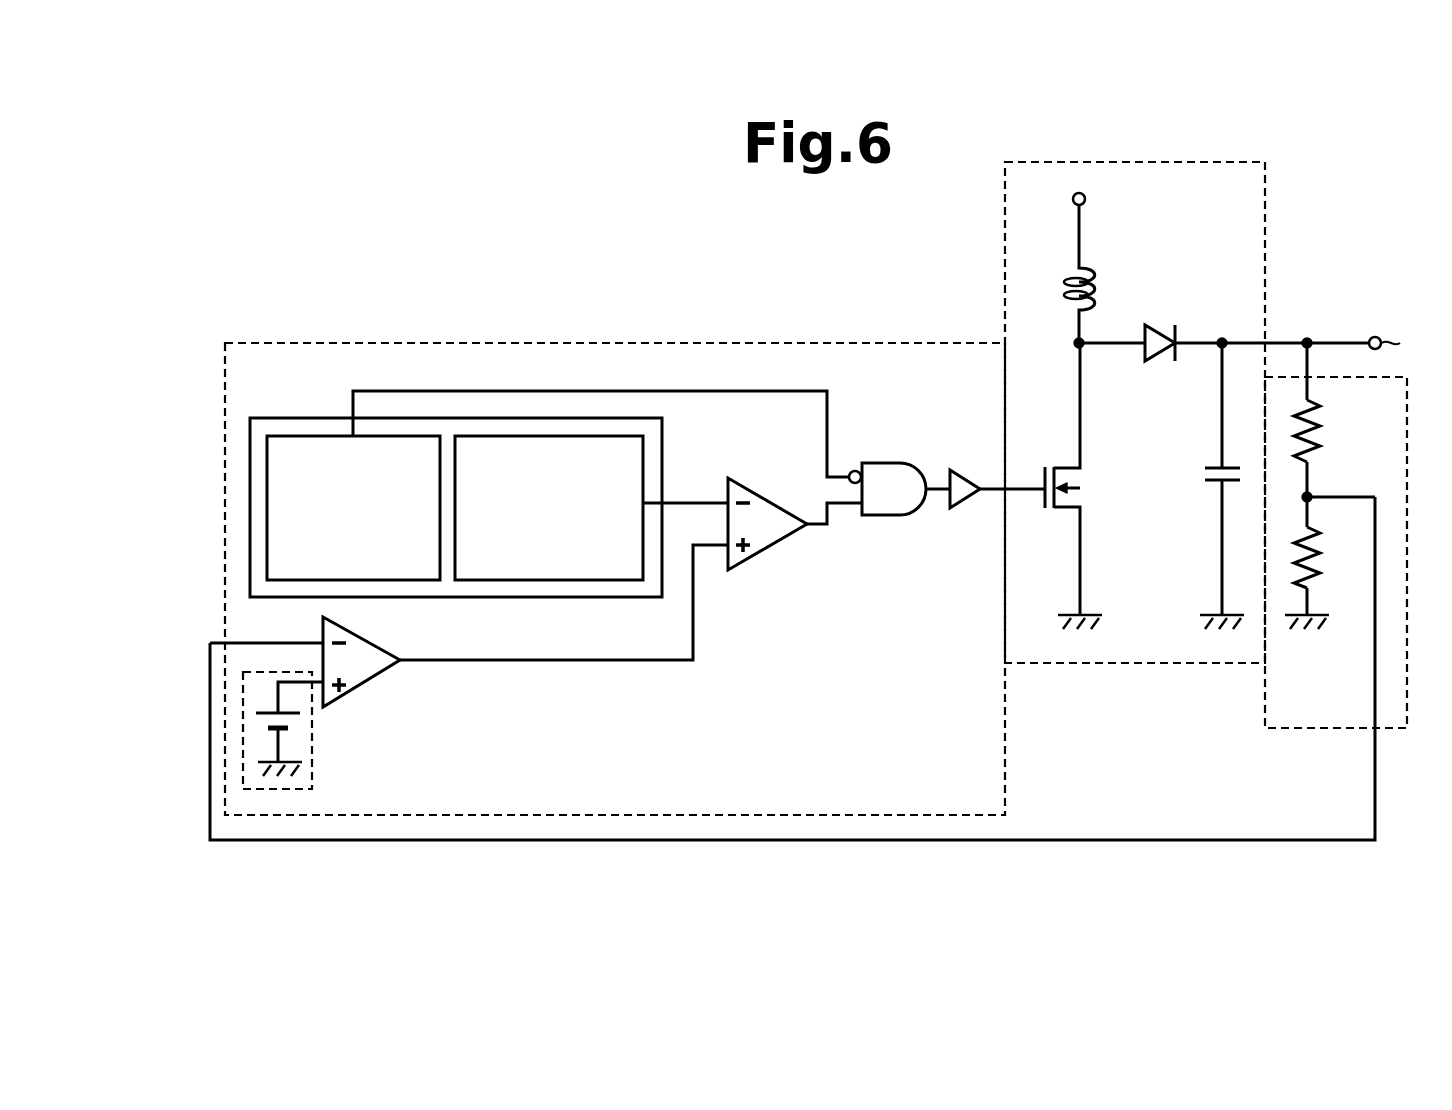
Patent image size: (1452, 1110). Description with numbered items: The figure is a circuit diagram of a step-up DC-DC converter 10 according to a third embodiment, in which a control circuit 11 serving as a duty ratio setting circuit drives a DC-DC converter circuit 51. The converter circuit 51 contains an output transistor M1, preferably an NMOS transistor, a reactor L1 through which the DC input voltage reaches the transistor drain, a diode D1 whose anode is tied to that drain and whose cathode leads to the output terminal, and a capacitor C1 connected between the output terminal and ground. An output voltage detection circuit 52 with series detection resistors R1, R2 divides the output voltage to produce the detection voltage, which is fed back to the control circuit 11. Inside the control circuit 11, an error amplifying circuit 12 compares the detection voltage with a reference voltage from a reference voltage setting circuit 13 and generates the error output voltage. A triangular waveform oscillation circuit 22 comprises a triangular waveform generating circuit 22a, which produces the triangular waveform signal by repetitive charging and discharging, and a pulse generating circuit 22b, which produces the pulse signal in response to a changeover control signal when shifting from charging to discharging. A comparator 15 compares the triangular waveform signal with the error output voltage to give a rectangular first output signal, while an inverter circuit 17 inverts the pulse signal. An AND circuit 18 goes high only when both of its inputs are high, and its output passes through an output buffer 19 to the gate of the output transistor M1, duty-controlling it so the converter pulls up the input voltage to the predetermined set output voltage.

The DC-DC converter 10 is at (875, 287).
The control circuit 11 is at (622, 340).
The error amplifying circuit 12 is at (373, 677).
The reference voltage setting circuit 13 is at (314, 750).
The comparator 15 is at (775, 545).
The inverter circuit 17 is at (853, 470).
The AND circuit 18 is at (875, 515).
The output buffer 19 is at (955, 472).
The triangular waveform oscillation circuit 22 is at (325, 418).
The triangular waveform generating circuit 22a is at (617, 580).
The pulse generating circuit 22b is at (410, 580).
The DC-DC converter circuit 51 is at (1266, 198).
The output voltage detection circuit 52 is at (1355, 730).
The reactor L1 is at (1097, 263).
The diode D1 is at (1160, 325).
The capacitor C1 is at (1212, 468).
The output transistor M1 is at (1080, 470).
The detection resistor R1 is at (1318, 438).
The detection resistor R2 is at (1318, 562).